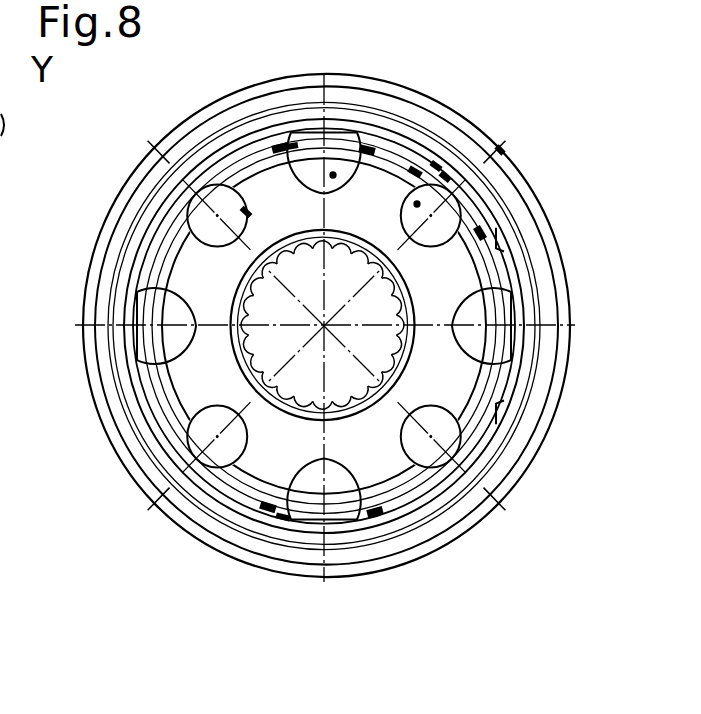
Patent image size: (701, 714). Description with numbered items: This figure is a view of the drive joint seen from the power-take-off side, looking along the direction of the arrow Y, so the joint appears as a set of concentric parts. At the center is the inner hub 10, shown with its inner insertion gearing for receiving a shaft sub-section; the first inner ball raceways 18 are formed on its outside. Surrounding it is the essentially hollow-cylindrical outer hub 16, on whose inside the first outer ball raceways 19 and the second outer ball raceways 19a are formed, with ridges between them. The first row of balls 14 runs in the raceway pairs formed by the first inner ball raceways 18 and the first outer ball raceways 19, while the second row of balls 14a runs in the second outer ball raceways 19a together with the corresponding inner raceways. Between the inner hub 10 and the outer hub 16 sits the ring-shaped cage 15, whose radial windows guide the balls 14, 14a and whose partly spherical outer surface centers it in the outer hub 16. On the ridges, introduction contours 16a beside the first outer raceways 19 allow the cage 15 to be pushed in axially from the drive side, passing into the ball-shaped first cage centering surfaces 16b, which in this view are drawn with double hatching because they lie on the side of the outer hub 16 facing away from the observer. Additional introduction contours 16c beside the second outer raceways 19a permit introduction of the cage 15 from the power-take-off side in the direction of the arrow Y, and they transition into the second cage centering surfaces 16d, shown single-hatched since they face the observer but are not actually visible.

The inner hub 10 is at (425, 365).
The first row of balls 14 is at (402, 155).
The second row of balls 14a is at (486, 226).
The ring-shaped cage 15 is at (497, 318).
The outer hub 16 is at (283, 517).
The introduction contours 16a is at (272, 142).
The first cage centering surfaces 16b is at (287, 143).
The additional introduction contours 16c is at (433, 166).
The second cage centering surfaces 16d is at (497, 160).
The first inner ball raceways 18 is at (247, 197).
The first outer ball raceways 19 is at (333, 175).
The second outer ball raceways 19a is at (417, 204).